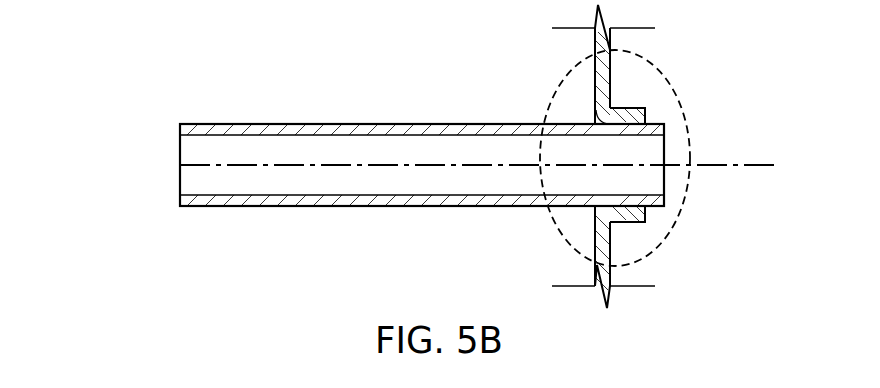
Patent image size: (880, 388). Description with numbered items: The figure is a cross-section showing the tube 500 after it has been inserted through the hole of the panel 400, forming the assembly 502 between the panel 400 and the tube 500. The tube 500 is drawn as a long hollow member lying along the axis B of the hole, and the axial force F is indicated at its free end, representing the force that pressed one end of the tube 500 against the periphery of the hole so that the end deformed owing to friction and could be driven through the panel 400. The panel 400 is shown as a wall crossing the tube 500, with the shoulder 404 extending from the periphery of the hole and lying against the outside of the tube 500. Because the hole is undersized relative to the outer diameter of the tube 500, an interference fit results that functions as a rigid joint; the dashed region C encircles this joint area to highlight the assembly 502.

The tube 500 is at (346, 96).
The panel 400 is at (602, 61).
The assembly 502 is at (658, 115).
The shoulder 404 is at (630, 217).
The detail region C is at (670, 80).
The axis B is at (755, 168).
The axial force F is at (172, 164).